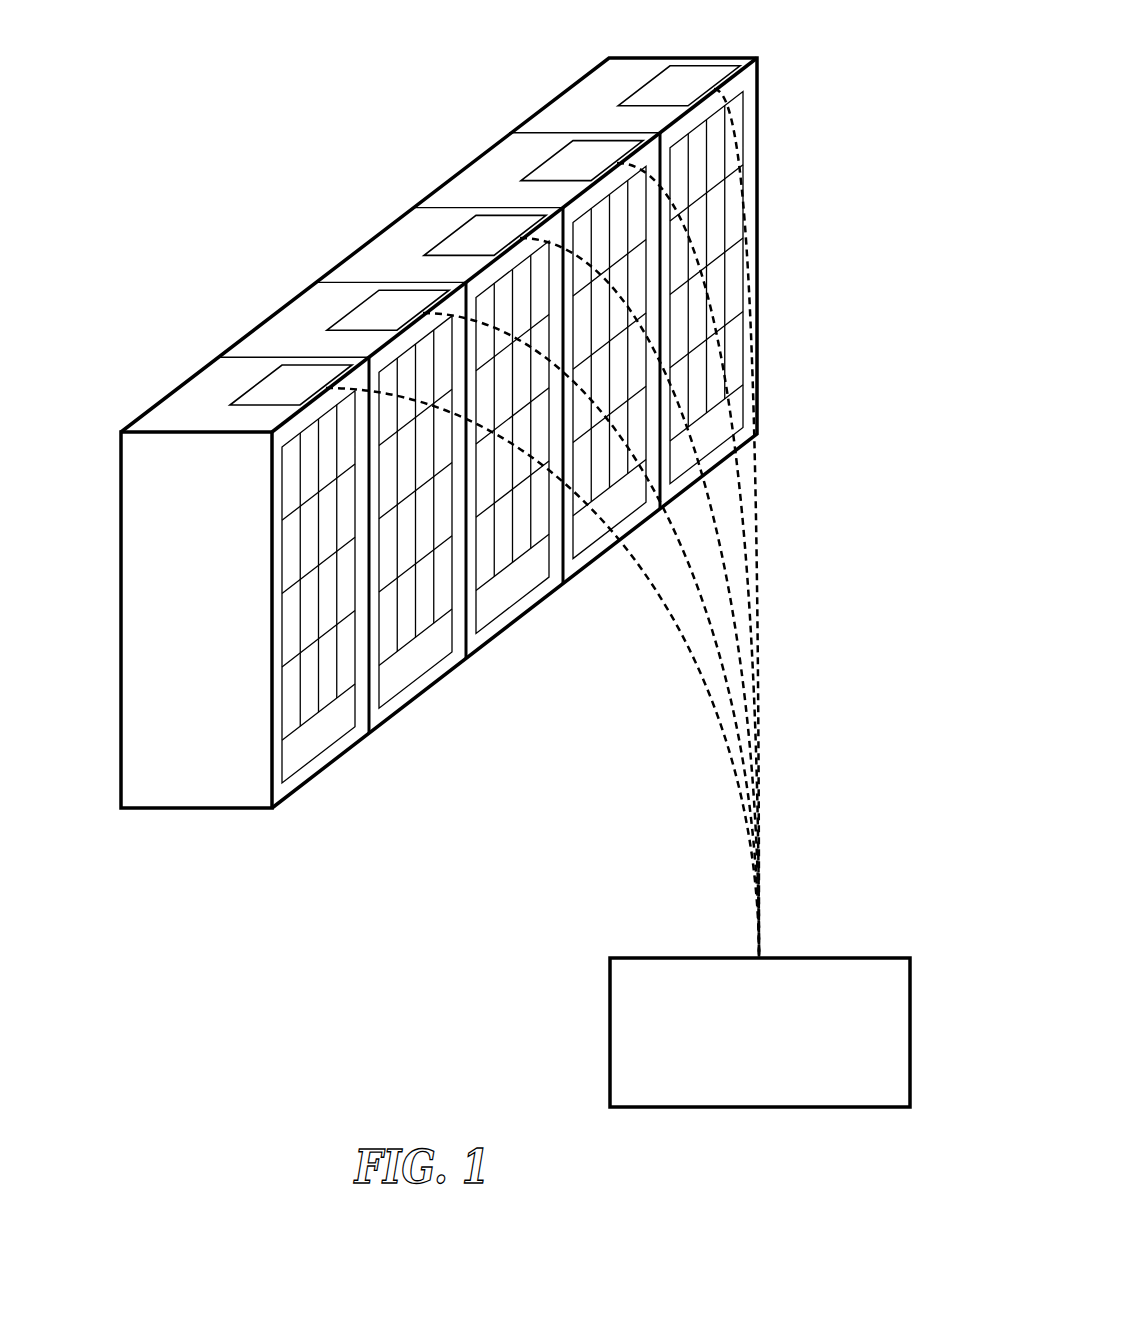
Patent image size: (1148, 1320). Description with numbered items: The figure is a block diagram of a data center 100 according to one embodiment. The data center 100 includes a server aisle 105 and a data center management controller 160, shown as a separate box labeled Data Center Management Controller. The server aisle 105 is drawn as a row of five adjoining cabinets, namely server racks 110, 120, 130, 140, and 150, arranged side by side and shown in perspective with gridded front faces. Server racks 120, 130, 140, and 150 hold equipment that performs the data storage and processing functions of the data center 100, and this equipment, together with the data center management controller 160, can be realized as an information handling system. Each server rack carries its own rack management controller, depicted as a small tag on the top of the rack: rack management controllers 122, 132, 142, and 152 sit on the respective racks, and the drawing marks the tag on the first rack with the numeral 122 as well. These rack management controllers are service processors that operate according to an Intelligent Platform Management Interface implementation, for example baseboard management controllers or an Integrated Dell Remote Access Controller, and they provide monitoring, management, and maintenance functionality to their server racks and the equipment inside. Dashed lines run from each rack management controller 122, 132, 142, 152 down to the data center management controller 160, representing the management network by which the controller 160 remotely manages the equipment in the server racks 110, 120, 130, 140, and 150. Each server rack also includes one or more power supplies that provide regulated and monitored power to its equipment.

The data center 100 is at (88, 1066).
The server aisle 105 is at (341, 141).
The server rack 110 is at (263, 570).
The server rack 120 is at (360, 495).
The server rack 130 is at (457, 421).
The server rack 140 is at (554, 346).
The server rack 150 is at (644, 288).
The rack management controller 122 is at (494, 624).
The rack management controller 132 is at (591, 586).
The rack management controller 142 is at (640, 549).
The rack management controller 152 is at (688, 512).
The data center management controller 160 is at (642, 958).